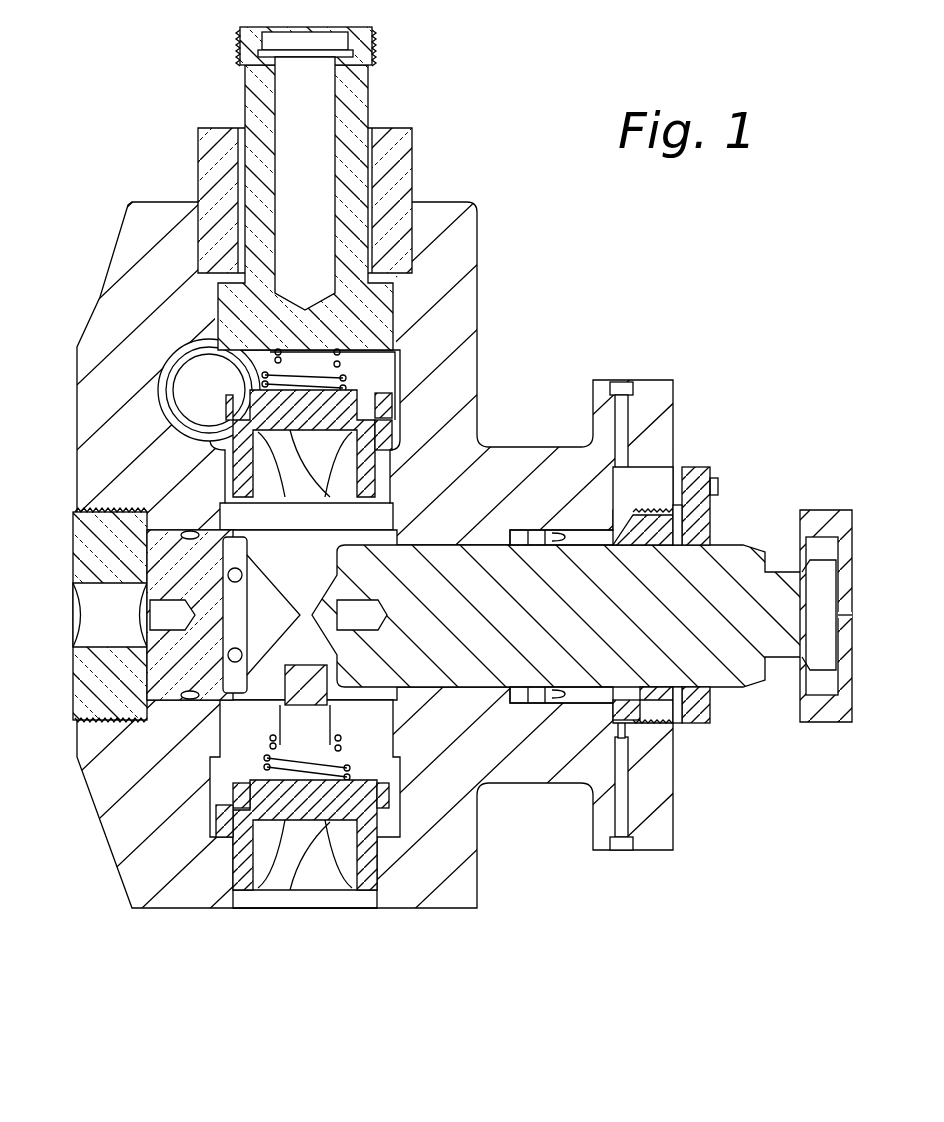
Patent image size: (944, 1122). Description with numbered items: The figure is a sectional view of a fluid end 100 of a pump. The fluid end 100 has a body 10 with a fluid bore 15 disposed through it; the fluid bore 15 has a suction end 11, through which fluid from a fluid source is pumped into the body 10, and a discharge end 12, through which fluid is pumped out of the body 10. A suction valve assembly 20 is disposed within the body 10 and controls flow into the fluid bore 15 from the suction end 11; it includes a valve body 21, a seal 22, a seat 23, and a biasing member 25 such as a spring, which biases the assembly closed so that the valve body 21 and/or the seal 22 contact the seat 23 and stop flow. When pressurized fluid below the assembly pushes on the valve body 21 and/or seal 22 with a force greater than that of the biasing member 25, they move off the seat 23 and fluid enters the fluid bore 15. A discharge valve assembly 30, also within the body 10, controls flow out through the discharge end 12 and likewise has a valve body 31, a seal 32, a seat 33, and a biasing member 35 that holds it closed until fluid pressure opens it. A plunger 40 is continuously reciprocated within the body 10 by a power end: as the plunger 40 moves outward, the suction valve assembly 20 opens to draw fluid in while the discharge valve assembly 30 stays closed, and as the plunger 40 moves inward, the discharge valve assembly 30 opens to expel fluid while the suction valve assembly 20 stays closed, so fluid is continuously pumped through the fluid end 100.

The fluid end 100 is at (116, 47).
The body 10 is at (122, 236).
The suction end 11 is at (240, 907).
The discharge end 12 is at (192, 362).
The fluid bore 15 is at (330, 622).
The suction valve assembly 20 is at (309, 835).
The valve body 21 is at (300, 872).
The seal 22 is at (228, 792).
The seat 23 is at (226, 832).
The biasing member 25 is at (348, 770).
The discharge valve assembly 30 is at (298, 457).
The valve body 31 is at (300, 500).
The seal 32 is at (393, 402).
The seat 33 is at (390, 430).
The biasing member 35 is at (346, 382).
The plunger 40 is at (738, 545).